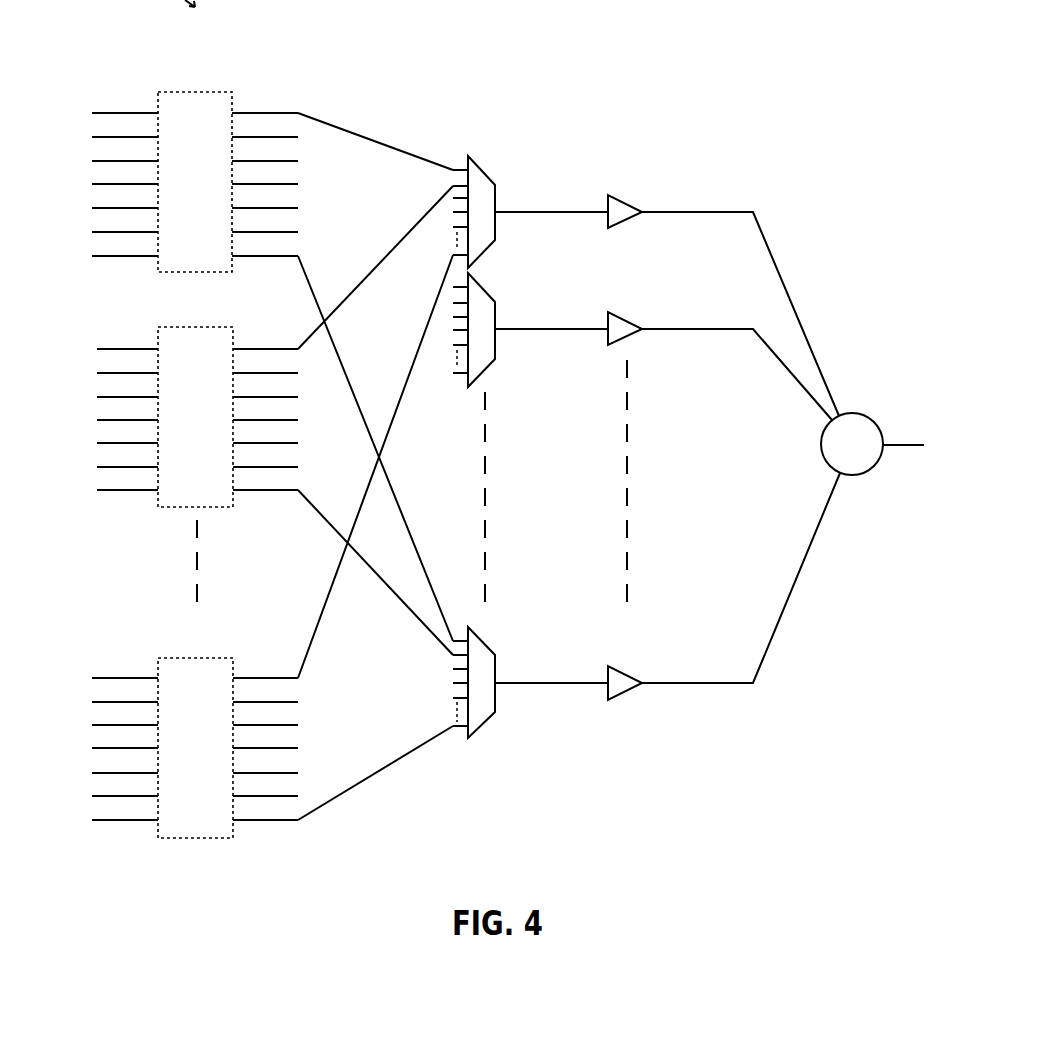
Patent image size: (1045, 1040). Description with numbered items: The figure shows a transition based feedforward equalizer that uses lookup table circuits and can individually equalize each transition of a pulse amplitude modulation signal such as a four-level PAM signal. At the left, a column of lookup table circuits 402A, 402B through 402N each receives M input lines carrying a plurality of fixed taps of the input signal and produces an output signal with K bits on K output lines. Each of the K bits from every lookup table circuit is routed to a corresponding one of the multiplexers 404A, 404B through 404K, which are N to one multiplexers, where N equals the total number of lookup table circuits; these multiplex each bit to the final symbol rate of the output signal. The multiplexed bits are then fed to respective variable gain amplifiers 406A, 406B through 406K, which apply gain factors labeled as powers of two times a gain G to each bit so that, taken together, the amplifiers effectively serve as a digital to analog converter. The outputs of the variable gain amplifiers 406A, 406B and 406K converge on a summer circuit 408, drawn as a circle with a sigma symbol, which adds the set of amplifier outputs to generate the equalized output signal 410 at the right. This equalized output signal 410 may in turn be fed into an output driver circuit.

The lookup table circuit 402A is at (115, 63).
The lookup table circuit 402B is at (85, 340).
The lookup table circuit 402N is at (133, 625).
The multiplexer 404A is at (483, 168).
The multiplexer 404B is at (490, 290).
The multiplexer 404K is at (490, 638).
The variable gain amplifier 406A is at (620, 192).
The variable gain amplifier 406B is at (620, 312).
The variable gain amplifier 406K is at (612, 658).
The summer circuit 408 is at (870, 415).
The equalized output signal 410 is at (903, 450).